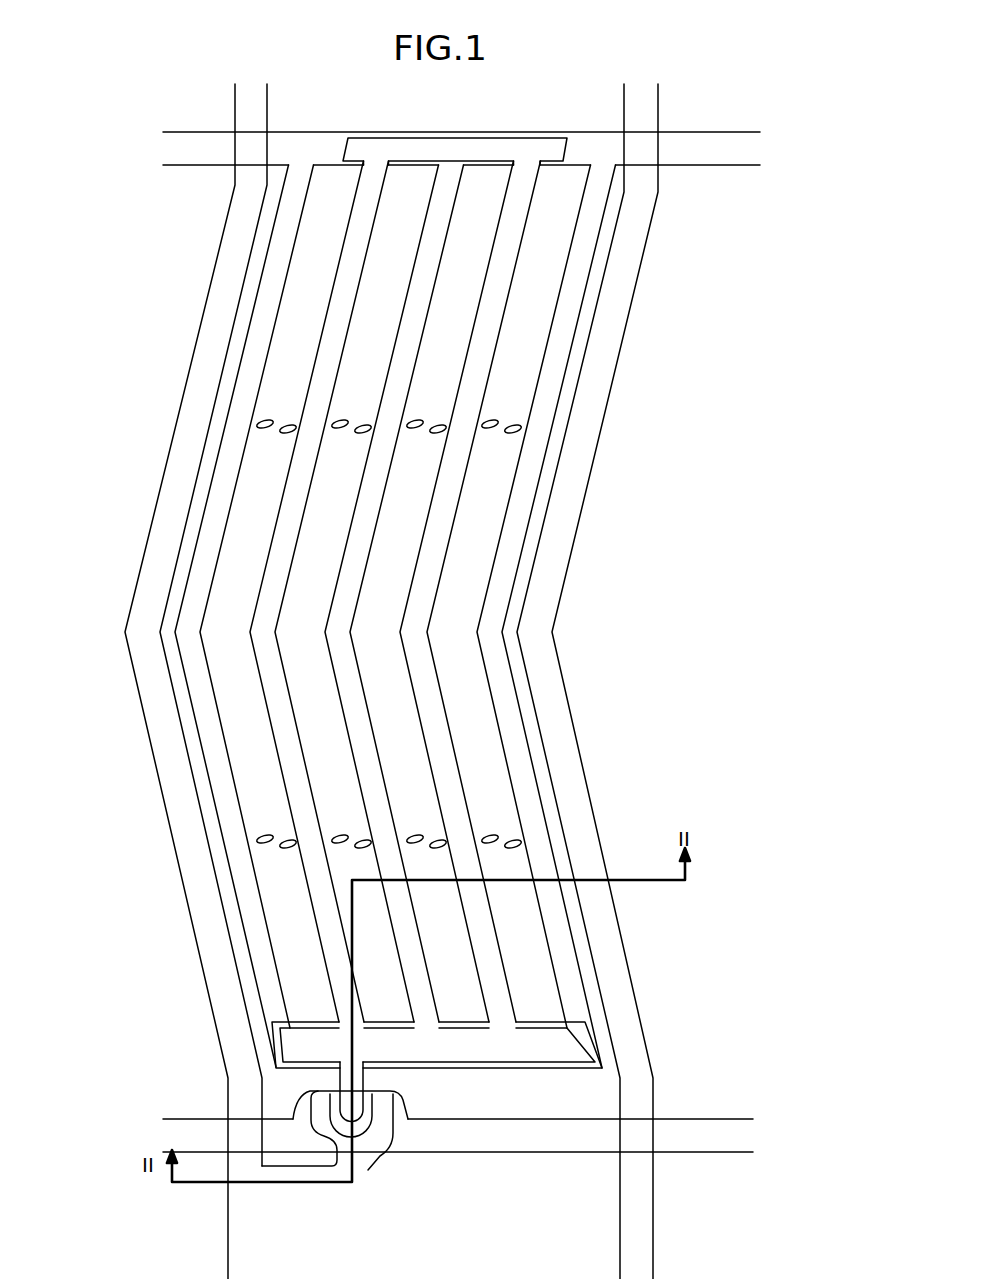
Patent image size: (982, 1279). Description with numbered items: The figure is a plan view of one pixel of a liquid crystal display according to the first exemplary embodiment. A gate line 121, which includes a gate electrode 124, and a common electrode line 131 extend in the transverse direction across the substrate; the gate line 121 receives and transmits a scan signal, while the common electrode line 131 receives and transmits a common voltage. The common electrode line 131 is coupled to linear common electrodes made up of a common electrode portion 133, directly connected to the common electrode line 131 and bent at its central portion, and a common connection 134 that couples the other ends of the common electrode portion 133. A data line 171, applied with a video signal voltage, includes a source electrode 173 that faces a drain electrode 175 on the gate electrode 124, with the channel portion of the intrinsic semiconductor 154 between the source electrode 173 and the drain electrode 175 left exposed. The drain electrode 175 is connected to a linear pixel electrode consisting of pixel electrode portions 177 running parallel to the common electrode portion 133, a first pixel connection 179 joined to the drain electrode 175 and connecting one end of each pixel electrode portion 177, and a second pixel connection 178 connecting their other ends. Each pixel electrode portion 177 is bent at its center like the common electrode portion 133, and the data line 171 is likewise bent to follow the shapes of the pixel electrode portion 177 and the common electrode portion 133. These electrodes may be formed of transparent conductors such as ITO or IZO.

The gate line 121 is at (575, 1146).
The gate electrode 124 is at (410, 1100).
The common electrode line 131 is at (302, 131).
The common electrode portion 133 is at (427, 183).
The common connection 134 is at (474, 1070).
The intrinsic semiconductor 154 is at (363, 1123).
The data line 171 is at (200, 954).
The source electrode 173 is at (297, 1188).
The drain electrode 175 is at (338, 1082).
The pixel electrode portion 177 is at (497, 934).
The second pixel connection 178 is at (548, 137).
The first pixel connection 179 is at (582, 1048).